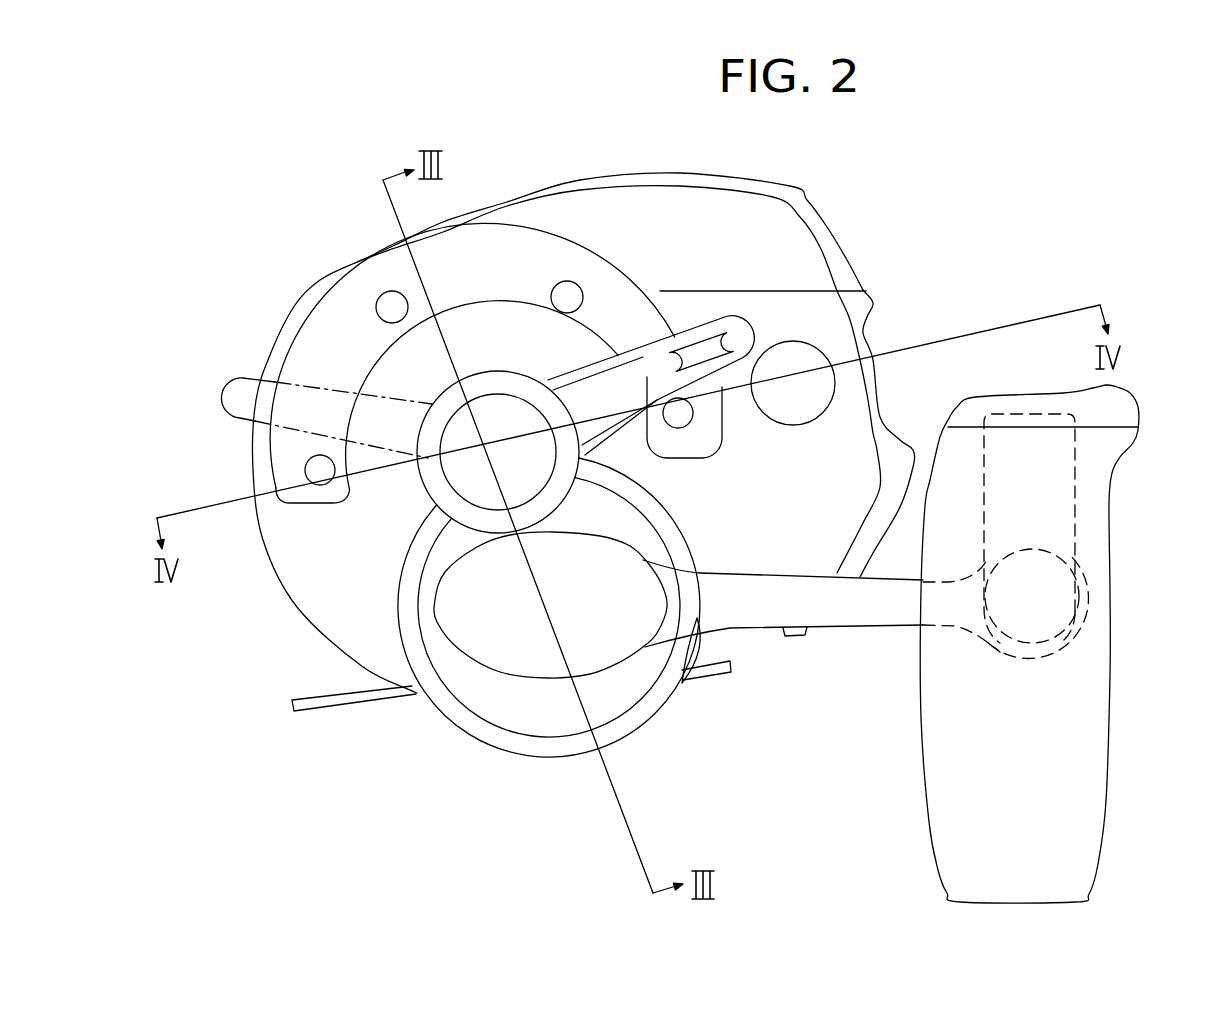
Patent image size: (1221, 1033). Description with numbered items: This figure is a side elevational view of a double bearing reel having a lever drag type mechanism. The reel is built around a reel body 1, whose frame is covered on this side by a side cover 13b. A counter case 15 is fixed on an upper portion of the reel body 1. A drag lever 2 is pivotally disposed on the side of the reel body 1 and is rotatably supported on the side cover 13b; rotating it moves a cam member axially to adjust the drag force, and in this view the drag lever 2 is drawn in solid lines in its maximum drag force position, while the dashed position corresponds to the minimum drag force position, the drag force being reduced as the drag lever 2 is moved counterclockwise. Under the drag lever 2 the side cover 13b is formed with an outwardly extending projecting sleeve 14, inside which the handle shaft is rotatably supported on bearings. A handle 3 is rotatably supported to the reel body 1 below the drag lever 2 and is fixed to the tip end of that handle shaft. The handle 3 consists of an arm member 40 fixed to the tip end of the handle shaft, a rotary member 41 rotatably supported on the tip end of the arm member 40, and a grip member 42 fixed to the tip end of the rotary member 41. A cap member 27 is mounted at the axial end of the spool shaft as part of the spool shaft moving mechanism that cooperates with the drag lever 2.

The reel body 1 is at (855, 341).
The drag lever 2 is at (640, 363).
The handle 3 is at (682, 683).
The side cover 13b is at (320, 573).
The projecting sleeve 14 is at (575, 713).
The counter case 15 is at (750, 207).
The cap member 27 is at (437, 478).
The arm member 40 is at (847, 617).
The rotary member 41 is at (1077, 519).
The grip member 42 is at (1087, 675).